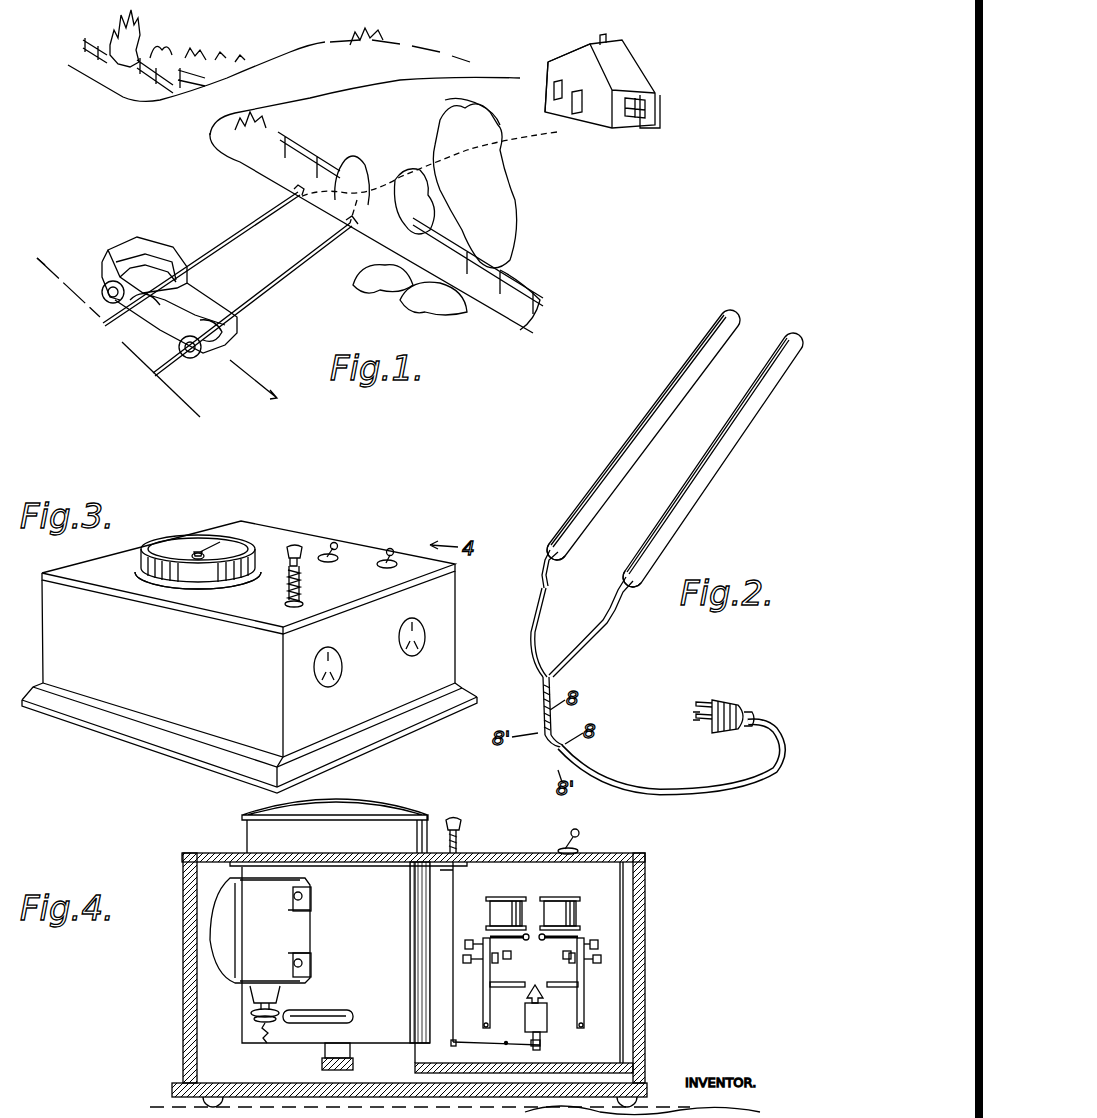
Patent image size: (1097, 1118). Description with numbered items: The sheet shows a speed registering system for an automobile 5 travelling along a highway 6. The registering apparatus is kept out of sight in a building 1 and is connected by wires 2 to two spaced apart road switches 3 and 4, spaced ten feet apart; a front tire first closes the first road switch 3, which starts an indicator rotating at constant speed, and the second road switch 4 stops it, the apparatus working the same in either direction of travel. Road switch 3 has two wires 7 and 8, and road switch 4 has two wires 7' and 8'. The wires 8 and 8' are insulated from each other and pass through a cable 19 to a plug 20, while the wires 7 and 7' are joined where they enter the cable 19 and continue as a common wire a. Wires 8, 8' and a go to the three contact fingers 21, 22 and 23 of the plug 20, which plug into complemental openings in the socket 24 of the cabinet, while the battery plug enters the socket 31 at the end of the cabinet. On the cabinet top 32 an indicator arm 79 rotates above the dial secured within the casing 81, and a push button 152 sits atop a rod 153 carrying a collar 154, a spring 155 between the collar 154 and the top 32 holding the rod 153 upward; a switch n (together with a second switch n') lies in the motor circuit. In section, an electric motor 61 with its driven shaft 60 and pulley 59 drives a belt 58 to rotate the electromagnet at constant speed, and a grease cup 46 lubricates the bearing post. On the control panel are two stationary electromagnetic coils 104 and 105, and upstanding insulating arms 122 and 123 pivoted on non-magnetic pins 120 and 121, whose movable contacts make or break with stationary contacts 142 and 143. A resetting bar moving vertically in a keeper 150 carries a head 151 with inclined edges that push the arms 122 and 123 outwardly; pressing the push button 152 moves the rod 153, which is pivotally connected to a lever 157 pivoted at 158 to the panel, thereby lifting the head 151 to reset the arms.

In FIG. 1, the building 1 is at (640, 122).
In FIG. 1, the wires 2 is at (412, 172).
In FIG. 1, the first road switch 3 is at (243, 230).
In FIG. 2, the first road switch 3 is at (712, 462).
In FIG. 1, the second road switch 4 is at (278, 282).
In FIG. 2, the second road switch 4 is at (618, 468).
In FIG. 3, the second road switch 4 is at (236, 639).
In FIG. 1, the automobile 5 is at (157, 307).
In FIG. 1, the highway 6 is at (69, 205).
In FIG. 2, the wire 7 is at (614, 590).
In FIG. 2, the wire 7' is at (562, 573).
In FIG. 2, the wire 8 is at (601, 636).
In FIG. 2, the wire 8' is at (533, 638).
In FIG. 2, the common wire a is at (548, 752).
In FIG. 2, the cable 19 is at (620, 782).
In FIG. 2, the plug 20 is at (732, 700).
In FIG. 2, the contact finger 21 is at (698, 700).
In FIG. 2, the contact finger 22 is at (704, 722).
In FIG. 2, the contact finger 23 is at (692, 715).
In FIG. 3, the socket 24 is at (411, 652).
In FIG. 3, the socket 31 is at (326, 683).
In FIG. 3, the top 32 is at (233, 525).
In FIG. 3, the indicator arm 79 is at (206, 543).
In FIG. 3, the casing 81 is at (252, 560).
In FIG. 4, the casing 81 is at (250, 830).
In FIG. 3, the push button 152 is at (298, 547).
In FIG. 4, the push button 152 is at (458, 820).
In FIG. 3, the spring 155 is at (300, 573).
In FIG. 4, the spring 155 is at (462, 838).
In FIG. 3, the collar 154 is at (285, 572).
In FIG. 3, the switch n is at (402, 540).
In FIG. 4, the switch n is at (588, 840).
In FIG. 3, the switch knob n' is at (354, 536).
In FIG. 4, the grease cup 46 is at (353, 1066).
In FIG. 4, the belt 58 is at (335, 1012).
In FIG. 4, the pulley 59 is at (266, 1045).
In FIG. 4, the shaft 60 is at (252, 1010).
In FIG. 4, the electric motor 61 is at (260, 940).
In FIG. 4, the stationary electromagnetic coil 104 is at (503, 895).
In FIG. 4, the stationary electromagnetic coil 105 is at (560, 895).
In FIG. 4, the pin 120 is at (483, 1020).
In FIG. 4, the pin 121 is at (584, 1014).
In FIG. 4, the upstanding arm 122 is at (483, 988).
In FIG. 4, the upstanding arm 123 is at (584, 985).
In FIG. 4, the stationary contact 142 is at (530, 980).
In FIG. 4, the stationary contact 143 is at (562, 958).
In FIG. 4, the keeper 150 is at (550, 1022).
In FIG. 4, the head 151 is at (520, 1006).
In FIG. 4, the rod 153 is at (454, 908).
In FIG. 4, the lever 157 is at (480, 1062).
In FIG. 4, the pivot 158 is at (525, 1064).